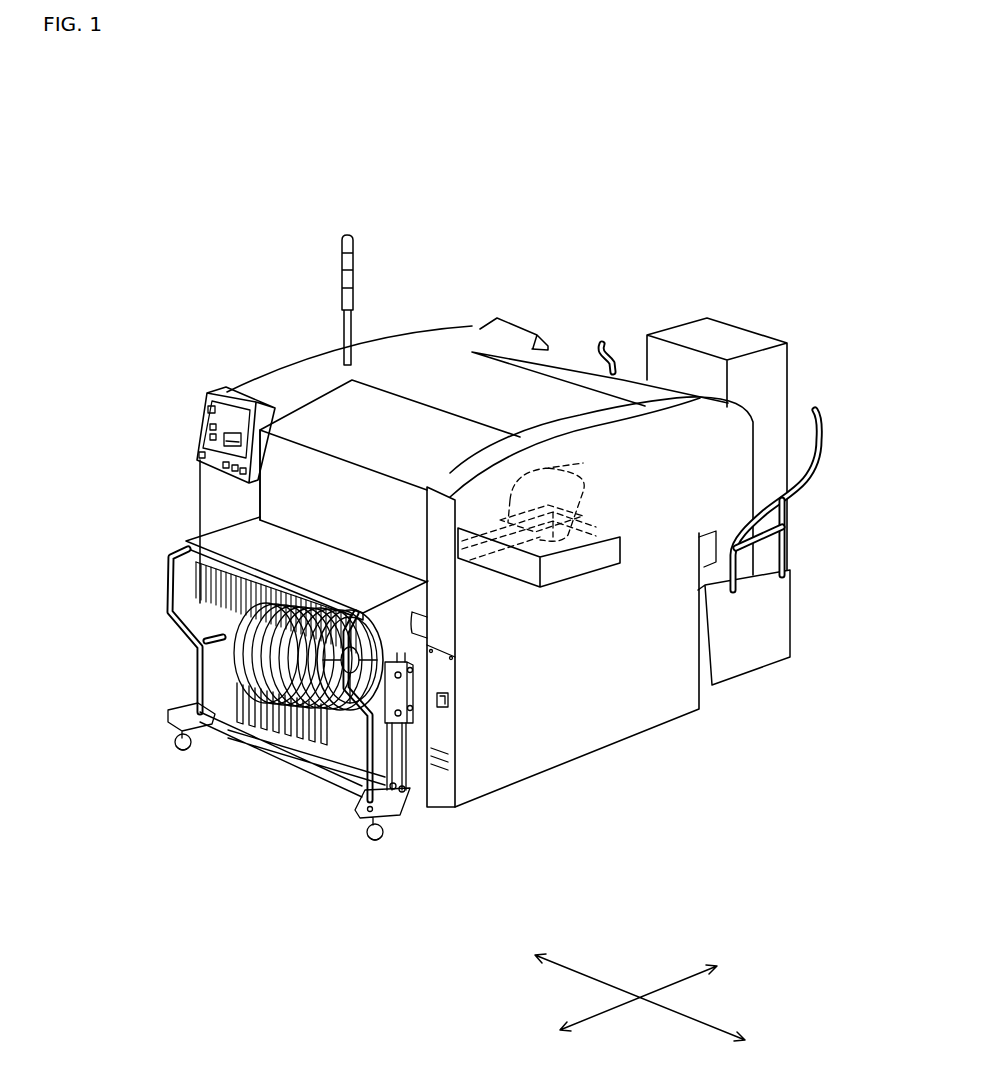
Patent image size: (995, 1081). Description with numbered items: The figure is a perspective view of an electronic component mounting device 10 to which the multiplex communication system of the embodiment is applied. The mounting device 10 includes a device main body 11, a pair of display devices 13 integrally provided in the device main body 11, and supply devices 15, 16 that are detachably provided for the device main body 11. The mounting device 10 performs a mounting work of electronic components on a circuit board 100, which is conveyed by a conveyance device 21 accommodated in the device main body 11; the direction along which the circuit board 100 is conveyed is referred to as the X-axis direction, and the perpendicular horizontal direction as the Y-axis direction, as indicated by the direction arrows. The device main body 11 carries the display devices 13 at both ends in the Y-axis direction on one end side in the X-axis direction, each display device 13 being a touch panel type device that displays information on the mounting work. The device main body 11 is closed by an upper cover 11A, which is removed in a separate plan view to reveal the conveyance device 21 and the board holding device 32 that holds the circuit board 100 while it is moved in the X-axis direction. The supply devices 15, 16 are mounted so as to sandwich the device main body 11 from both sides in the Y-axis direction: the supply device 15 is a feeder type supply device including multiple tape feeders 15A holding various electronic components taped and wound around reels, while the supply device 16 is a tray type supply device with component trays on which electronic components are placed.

The mounting device 10 is at (529, 169).
The device main body 11 is at (384, 321).
The upper cover 11A is at (457, 338).
The display device 13 is at (538, 314).
The supply device 16 is at (811, 352).
The conveyance device 21 is at (600, 511).
The circuit board 100 is at (583, 463).
The board holding device 32 is at (587, 486).
The supply device 15 is at (273, 780).
The tape feeder 15A is at (237, 652).